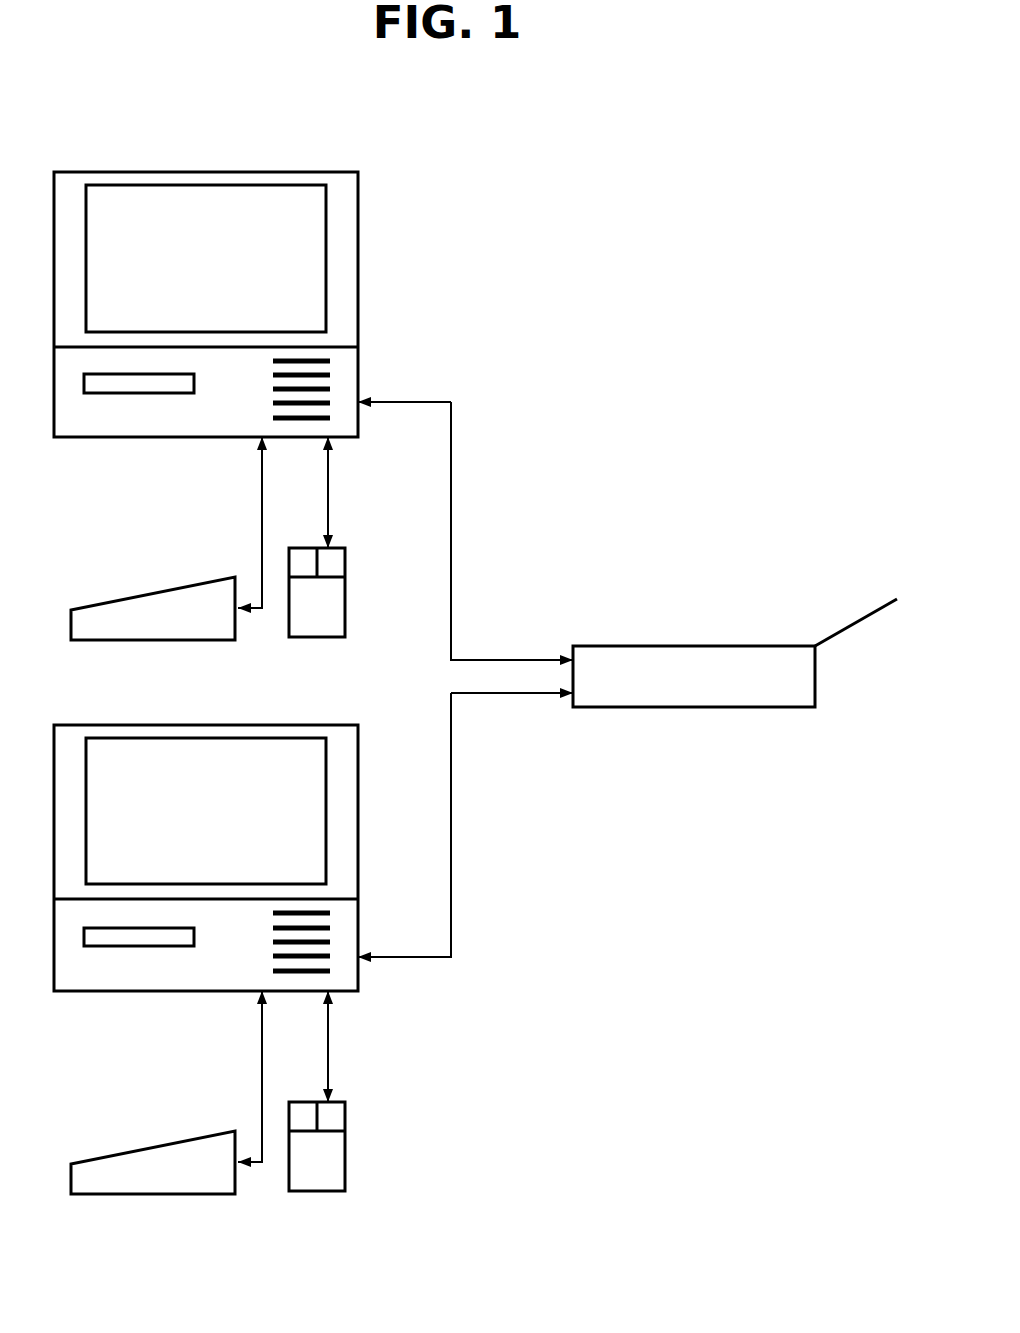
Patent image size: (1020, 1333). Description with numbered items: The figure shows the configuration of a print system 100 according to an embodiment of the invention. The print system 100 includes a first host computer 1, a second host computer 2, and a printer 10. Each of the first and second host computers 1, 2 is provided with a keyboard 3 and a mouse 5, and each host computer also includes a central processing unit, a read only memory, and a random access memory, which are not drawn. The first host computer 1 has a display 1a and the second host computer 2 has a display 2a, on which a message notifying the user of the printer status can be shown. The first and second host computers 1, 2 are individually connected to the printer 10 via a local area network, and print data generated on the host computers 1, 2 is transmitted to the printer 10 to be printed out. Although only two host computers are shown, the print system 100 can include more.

The print system 100 is at (572, 348).
The first host computer 1 is at (296, 172).
The display screen of first computer 1a is at (307, 237).
The second host computer 2 is at (296, 725).
The display 2a is at (307, 790).
The keyboard 3 is at (98, 605).
The mouse 5 is at (345, 561).
The printer 10 is at (623, 646).